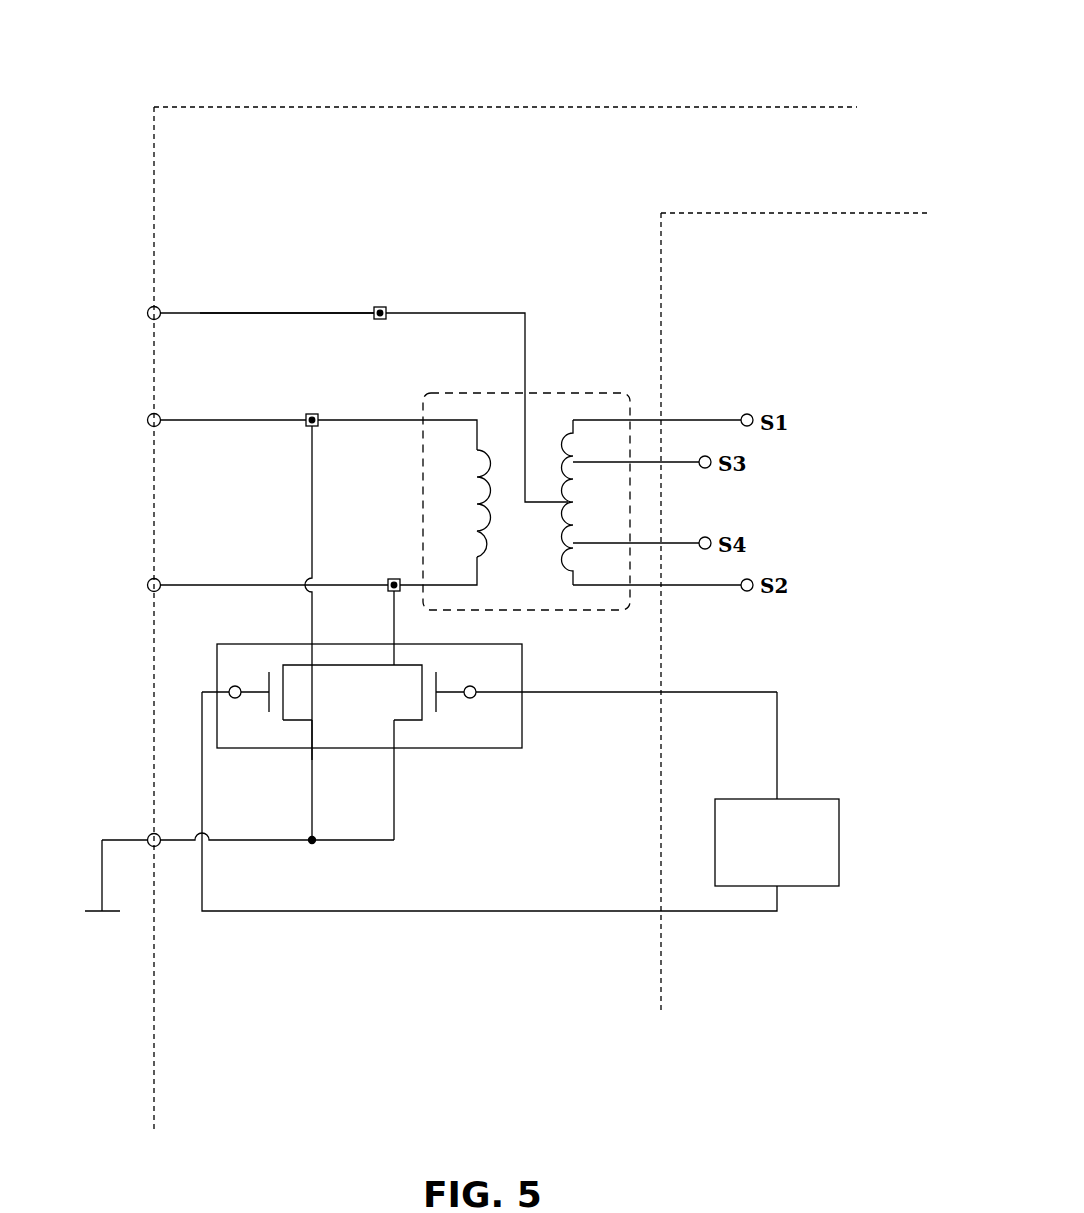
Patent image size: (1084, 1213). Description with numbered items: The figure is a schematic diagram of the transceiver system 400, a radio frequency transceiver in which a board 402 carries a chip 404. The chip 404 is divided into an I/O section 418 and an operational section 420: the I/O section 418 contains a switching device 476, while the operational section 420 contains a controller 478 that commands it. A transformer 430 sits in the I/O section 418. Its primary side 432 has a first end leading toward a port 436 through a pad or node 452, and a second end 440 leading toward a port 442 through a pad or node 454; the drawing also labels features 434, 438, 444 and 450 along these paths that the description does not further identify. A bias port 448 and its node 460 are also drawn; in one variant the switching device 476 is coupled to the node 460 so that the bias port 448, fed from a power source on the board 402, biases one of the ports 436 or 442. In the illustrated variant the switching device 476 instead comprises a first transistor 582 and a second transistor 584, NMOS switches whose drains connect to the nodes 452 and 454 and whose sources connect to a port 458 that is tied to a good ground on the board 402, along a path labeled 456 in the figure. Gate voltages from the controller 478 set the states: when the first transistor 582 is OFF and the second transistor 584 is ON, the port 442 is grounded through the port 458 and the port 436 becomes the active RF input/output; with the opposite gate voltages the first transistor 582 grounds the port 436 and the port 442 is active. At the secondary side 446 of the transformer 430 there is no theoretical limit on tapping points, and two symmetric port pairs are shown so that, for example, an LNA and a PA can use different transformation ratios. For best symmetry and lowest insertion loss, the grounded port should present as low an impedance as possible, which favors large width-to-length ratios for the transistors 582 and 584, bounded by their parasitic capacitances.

The system 400 is at (838, 82).
The board 402 is at (78, 118).
The chip 404 is at (262, 107).
The I/O section 418 is at (484, 198).
The operational section 420 is at (782, 213).
The transformer 430 is at (538, 394).
The primary side 432 is at (401, 414).
The primary inductor 434 is at (478, 450).
The port 436 is at (161, 417).
The line 438 is at (232, 420).
The second end 440 is at (416, 603).
The port 442 is at (161, 582).
The line 444 is at (247, 585).
The secondary side 446 is at (574, 433).
The bias port 448 is at (161, 309).
The line 450 is at (262, 312).
The node 452 is at (314, 414).
The node 454 is at (390, 578).
The ground line 456 is at (233, 843).
The port 458 is at (160, 834).
The node 460 is at (386, 306).
The switching device 476 is at (475, 749).
The controller 478 is at (818, 799).
The first transistor 582 is at (310, 708).
The second transistor 584 is at (395, 708).